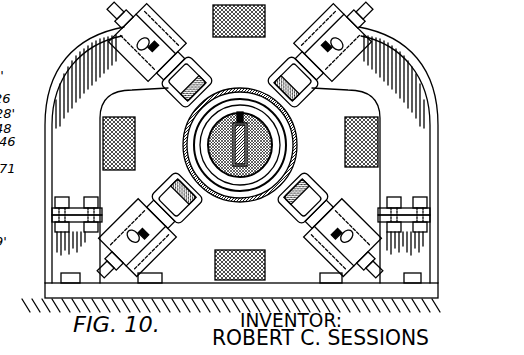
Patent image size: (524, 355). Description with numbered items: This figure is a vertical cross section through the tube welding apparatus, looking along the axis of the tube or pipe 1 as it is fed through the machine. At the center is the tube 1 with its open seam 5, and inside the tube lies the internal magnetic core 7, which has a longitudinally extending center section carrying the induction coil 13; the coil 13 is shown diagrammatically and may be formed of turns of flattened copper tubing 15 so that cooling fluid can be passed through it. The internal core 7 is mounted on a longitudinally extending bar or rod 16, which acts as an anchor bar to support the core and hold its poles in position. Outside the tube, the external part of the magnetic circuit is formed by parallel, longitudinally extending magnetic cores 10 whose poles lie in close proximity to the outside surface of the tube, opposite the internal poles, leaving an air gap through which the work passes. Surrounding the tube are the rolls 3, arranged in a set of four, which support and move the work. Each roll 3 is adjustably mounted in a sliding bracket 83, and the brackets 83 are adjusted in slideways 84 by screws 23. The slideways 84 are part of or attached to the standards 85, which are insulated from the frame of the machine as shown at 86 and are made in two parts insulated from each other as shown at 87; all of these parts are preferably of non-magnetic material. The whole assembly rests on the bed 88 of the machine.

The tube or pipe 1 is at (250, 201).
The rolls 3 is at (198, 80).
The open seam 5 is at (240, 88).
The internal magnetic core 7 is at (277, 150).
The magnetic cores 10 is at (103, 148).
The induction coil 13 is at (276, 135).
The flattened copper tubing 15 is at (230, 136).
The bar or rod 16 is at (232, 150).
The screws 23 is at (108, 20).
The sliding brackets 83 is at (168, 88).
The slideways 84 is at (168, 38).
The standards 85 is at (67, 73).
The insulation from frame 86 is at (64, 304).
The insulation between standard parts 87 is at (56, 213).
The bed 88 is at (200, 305).